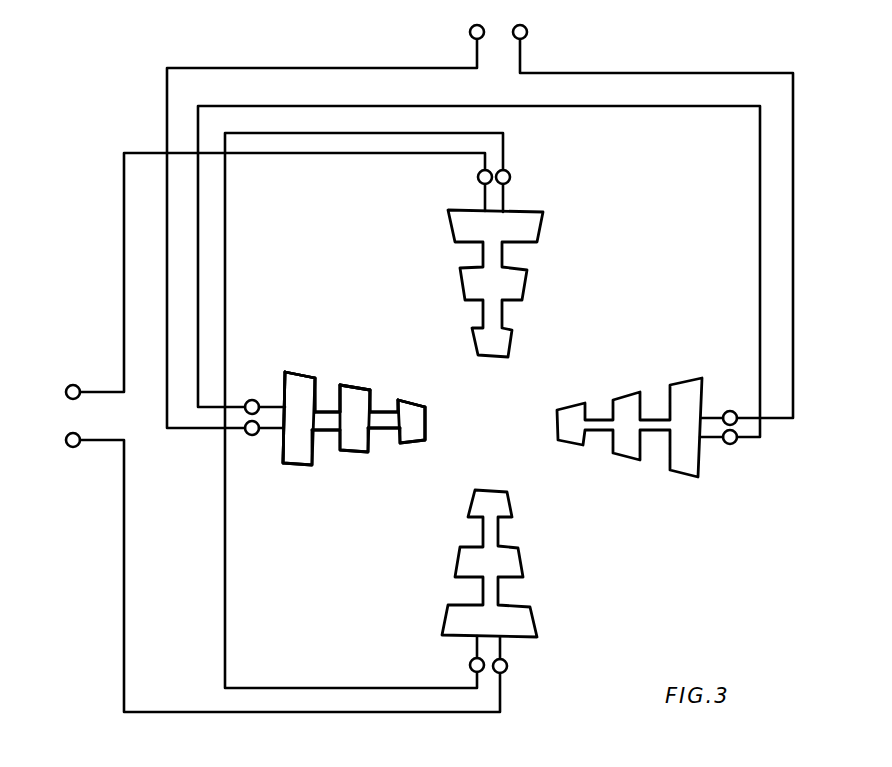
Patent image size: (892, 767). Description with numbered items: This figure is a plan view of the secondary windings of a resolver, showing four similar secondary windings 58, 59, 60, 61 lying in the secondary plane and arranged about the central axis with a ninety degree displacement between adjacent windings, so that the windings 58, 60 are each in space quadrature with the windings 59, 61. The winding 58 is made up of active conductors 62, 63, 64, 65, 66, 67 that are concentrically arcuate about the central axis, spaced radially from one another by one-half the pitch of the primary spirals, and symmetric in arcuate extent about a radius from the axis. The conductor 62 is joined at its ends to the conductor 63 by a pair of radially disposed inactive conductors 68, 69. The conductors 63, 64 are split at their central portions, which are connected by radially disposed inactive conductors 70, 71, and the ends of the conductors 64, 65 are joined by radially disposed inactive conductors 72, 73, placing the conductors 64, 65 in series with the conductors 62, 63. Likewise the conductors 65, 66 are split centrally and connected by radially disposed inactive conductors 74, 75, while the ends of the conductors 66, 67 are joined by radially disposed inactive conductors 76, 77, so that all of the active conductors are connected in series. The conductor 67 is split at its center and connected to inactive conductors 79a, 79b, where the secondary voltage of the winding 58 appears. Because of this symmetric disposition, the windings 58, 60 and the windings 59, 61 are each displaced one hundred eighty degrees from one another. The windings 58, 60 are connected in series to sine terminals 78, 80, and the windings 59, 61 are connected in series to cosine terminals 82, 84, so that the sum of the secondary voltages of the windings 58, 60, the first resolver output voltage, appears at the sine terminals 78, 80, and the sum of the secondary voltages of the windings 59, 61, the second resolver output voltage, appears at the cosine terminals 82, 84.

The secondary winding 58 is at (431, 432).
The secondary winding 59 is at (527, 286).
The secondary winding 60 is at (620, 397).
The secondary winding 61 is at (521, 555).
The active conductor 62 is at (428, 418).
The active conductor 63 is at (397, 400).
The active conductor 64 is at (381, 408).
The active conductor 65 is at (341, 392).
The active conductor 66 is at (317, 410).
The active conductor 67 is at (285, 371).
The inactive conductor 68 is at (416, 444).
The inactive conductor 69 is at (424, 404).
The inactive conductor 70 is at (391, 404).
The inactive conductor 71 is at (385, 431).
The inactive conductor 72 is at (360, 389).
The inactive conductor 73 is at (360, 454).
The inactive conductor 74 is at (330, 410).
The inactive conductor 75 is at (324, 432).
The inactive conductor 76 is at (299, 372).
The inactive conductor 77 is at (300, 466).
The sine terminal 78 is at (471, 26).
The inactive conductor 79a is at (263, 399).
The inactive conductor 79b is at (264, 433).
The sine terminal 80 is at (527, 29).
The cosine terminal 82 is at (68, 386).
The cosine terminal 84 is at (68, 448).